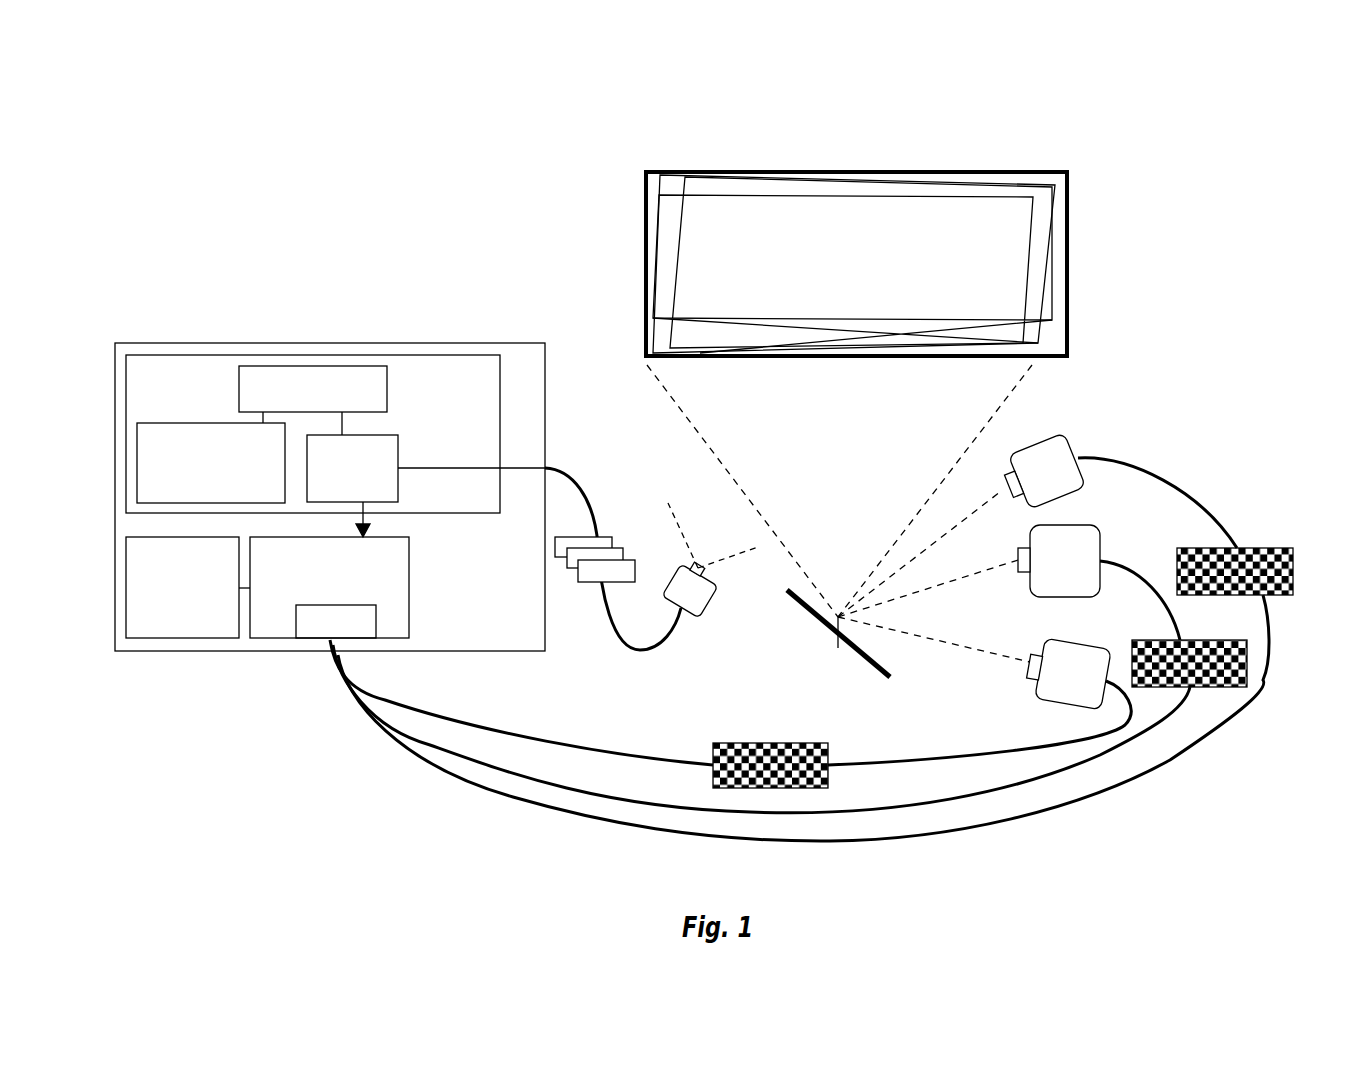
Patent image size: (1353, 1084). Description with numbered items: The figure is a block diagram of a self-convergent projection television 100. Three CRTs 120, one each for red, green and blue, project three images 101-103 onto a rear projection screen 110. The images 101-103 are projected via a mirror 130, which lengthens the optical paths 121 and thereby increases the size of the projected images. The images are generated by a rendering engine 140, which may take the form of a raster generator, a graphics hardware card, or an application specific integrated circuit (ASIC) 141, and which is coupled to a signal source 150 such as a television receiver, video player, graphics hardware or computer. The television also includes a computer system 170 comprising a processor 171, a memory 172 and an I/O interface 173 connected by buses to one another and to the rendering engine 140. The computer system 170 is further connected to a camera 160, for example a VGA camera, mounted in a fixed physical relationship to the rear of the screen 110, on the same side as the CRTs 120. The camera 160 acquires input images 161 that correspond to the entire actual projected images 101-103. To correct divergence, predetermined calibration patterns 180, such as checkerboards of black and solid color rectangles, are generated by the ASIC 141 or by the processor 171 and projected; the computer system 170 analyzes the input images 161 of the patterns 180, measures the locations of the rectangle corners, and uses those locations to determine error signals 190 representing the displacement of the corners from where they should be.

The self-convergent projection television 100 is at (742, 888).
The images 101-103 is at (893, 182).
The rear projection screen 110 is at (645, 218).
The CRTs 120 is at (1057, 432).
The optical paths 121 is at (960, 444).
The mirror 130 is at (827, 630).
The rendering engine 140 is at (283, 640).
The application specific integrated circuit (ASIC) 141 is at (377, 632).
The signal source 150 is at (182, 640).
The camera 160 is at (707, 607).
The input images 161 is at (615, 542).
The computer system 170 is at (205, 357).
The processor 171 is at (388, 384).
The memory 172 is at (178, 423).
The I/O interface 173 is at (398, 447).
The calibration patterns 180 is at (741, 743).
The error signals 190 is at (372, 527).